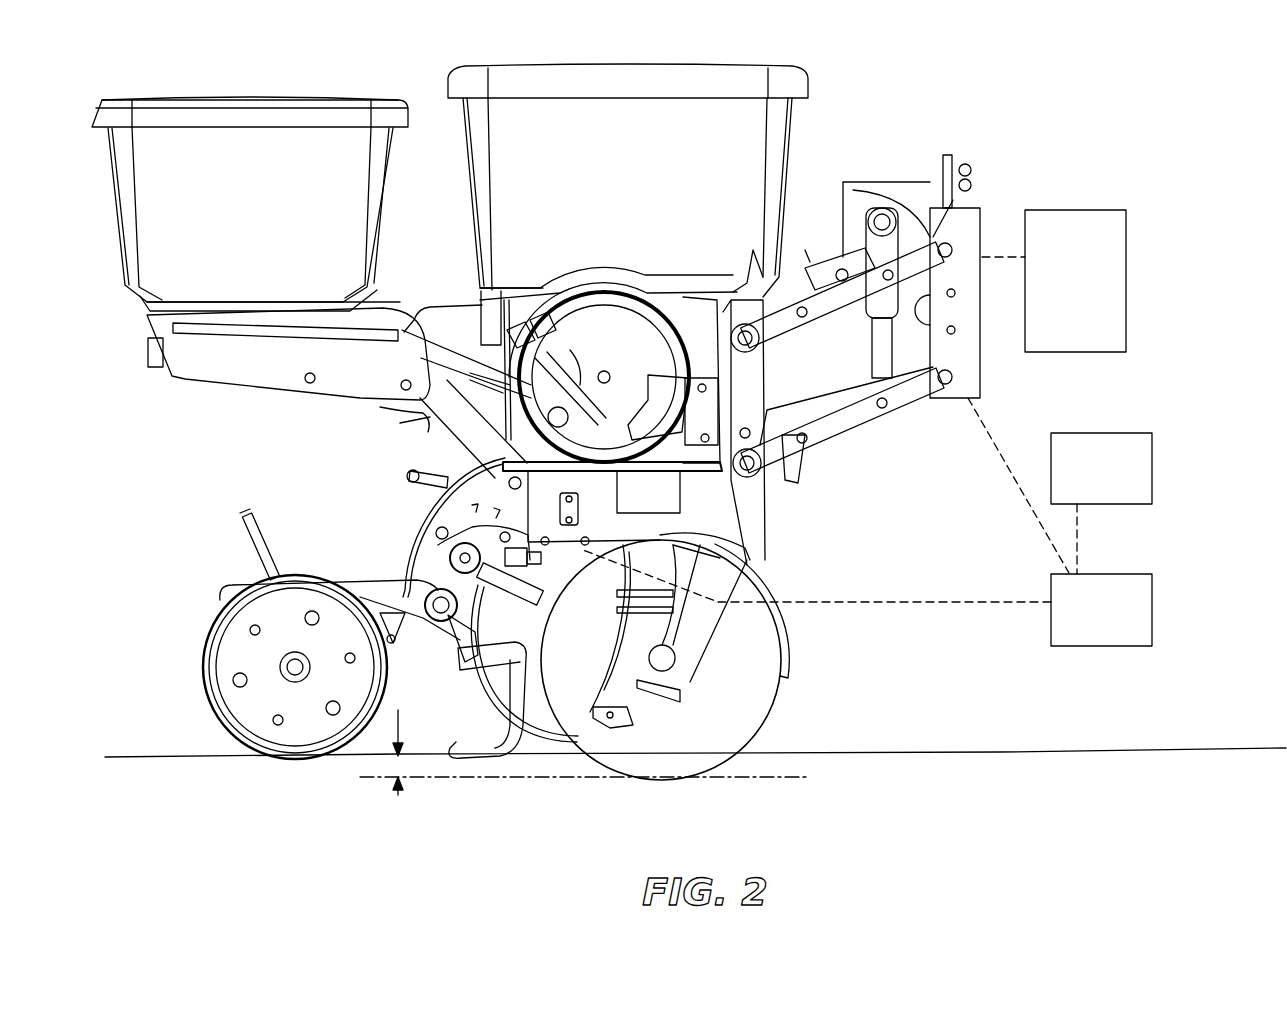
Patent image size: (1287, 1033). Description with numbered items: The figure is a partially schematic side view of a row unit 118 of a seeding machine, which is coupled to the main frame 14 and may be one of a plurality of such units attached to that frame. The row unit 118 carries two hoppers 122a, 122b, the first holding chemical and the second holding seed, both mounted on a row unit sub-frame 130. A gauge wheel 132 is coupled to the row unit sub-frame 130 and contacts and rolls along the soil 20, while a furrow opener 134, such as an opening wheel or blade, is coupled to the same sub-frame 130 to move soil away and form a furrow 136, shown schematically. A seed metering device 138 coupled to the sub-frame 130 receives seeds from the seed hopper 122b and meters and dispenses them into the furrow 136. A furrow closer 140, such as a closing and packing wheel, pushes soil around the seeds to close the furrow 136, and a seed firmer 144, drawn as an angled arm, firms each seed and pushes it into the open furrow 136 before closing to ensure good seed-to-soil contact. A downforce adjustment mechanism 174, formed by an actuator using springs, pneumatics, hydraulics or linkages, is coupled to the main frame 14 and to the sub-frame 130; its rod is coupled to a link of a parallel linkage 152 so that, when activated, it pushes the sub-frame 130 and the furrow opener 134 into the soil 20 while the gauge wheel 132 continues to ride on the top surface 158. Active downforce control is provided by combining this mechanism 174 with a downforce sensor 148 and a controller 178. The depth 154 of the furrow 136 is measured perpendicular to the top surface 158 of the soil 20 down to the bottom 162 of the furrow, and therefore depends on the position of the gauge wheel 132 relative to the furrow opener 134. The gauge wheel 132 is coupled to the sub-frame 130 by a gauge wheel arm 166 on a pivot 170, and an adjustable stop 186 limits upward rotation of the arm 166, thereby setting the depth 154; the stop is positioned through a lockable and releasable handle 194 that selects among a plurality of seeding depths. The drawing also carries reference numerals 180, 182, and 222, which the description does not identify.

The main frame 14 is at (1085, 210).
The soil 20 is at (835, 801).
The row unit 118 is at (880, 508).
The hopper 122a is at (210, 98).
The hopper 122b is at (527, 65).
The row unit sub-frame 130 is at (430, 420).
The gauge wheel 132 is at (560, 747).
The furrow opener 134 is at (743, 702).
The furrow 136 is at (593, 770).
The seed metering device 138 is at (500, 424).
The furrow closer 140 is at (212, 716).
The seed firmer 144 is at (470, 765).
The downforce sensor 148 is at (532, 522).
The parallel linkage 152 is at (870, 413).
The depth 154 is at (398, 777).
The top surface 158 is at (950, 752).
The bottom 162 is at (378, 777).
The gauge wheel arm 166 is at (457, 648).
The pivot 170 is at (450, 558).
The downforce adjustment mechanism 174 is at (878, 353).
The controller 178 is at (1152, 598).
The gauge wheel arm 180 is at (640, 688).
The sensor module 182 is at (1152, 455).
The stops 186 is at (440, 540).
The handle 194 is at (408, 476).
The closing wheel arm 222 is at (427, 683).